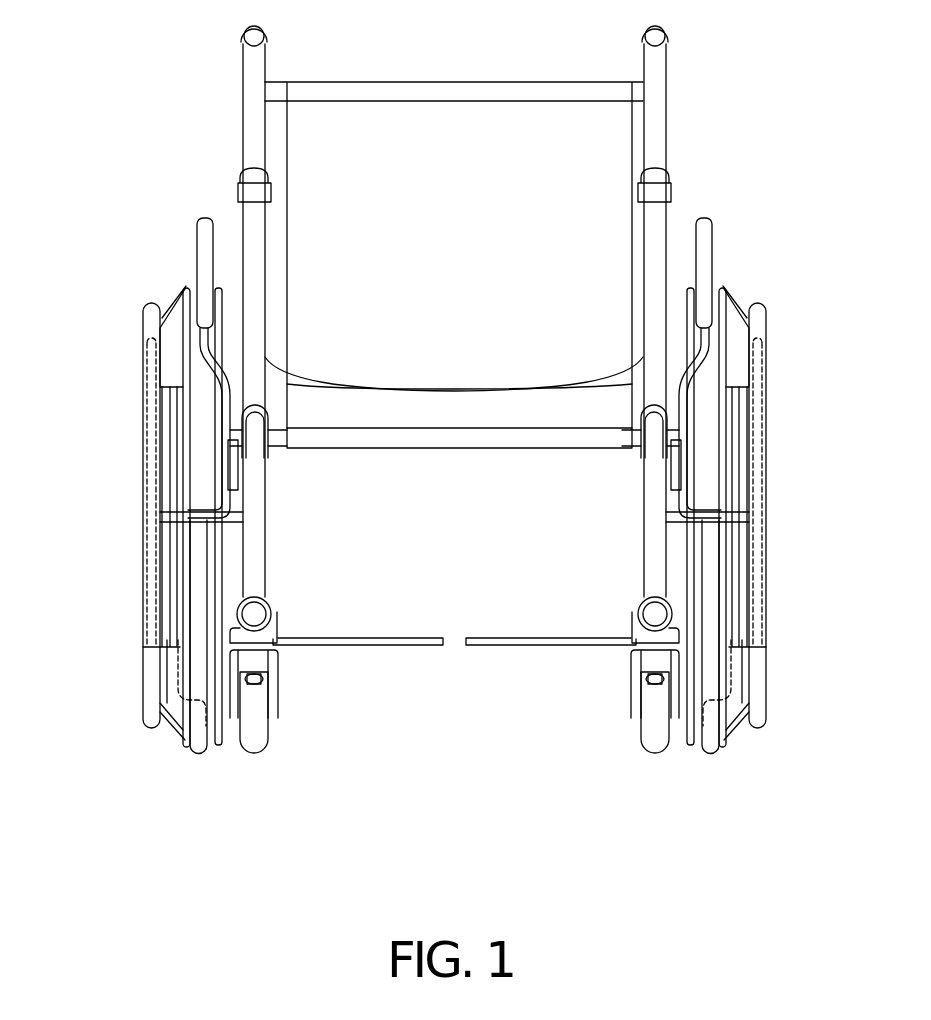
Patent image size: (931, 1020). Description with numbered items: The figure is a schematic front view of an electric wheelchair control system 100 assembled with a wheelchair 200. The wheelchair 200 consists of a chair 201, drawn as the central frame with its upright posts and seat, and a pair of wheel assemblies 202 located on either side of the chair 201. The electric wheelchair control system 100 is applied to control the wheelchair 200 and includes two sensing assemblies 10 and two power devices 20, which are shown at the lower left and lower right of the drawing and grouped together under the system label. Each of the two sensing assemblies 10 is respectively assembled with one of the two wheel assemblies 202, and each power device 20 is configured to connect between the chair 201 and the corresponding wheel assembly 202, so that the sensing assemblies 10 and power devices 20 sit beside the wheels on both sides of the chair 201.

The electric wheelchair control system 100 is at (196, 805).
The sensing assembly 10 is at (158, 574).
The power device 20 is at (182, 733).
The wheelchair 200 is at (98, 137).
The chair 201 is at (252, 131).
The wheel assembly 202 is at (168, 275).